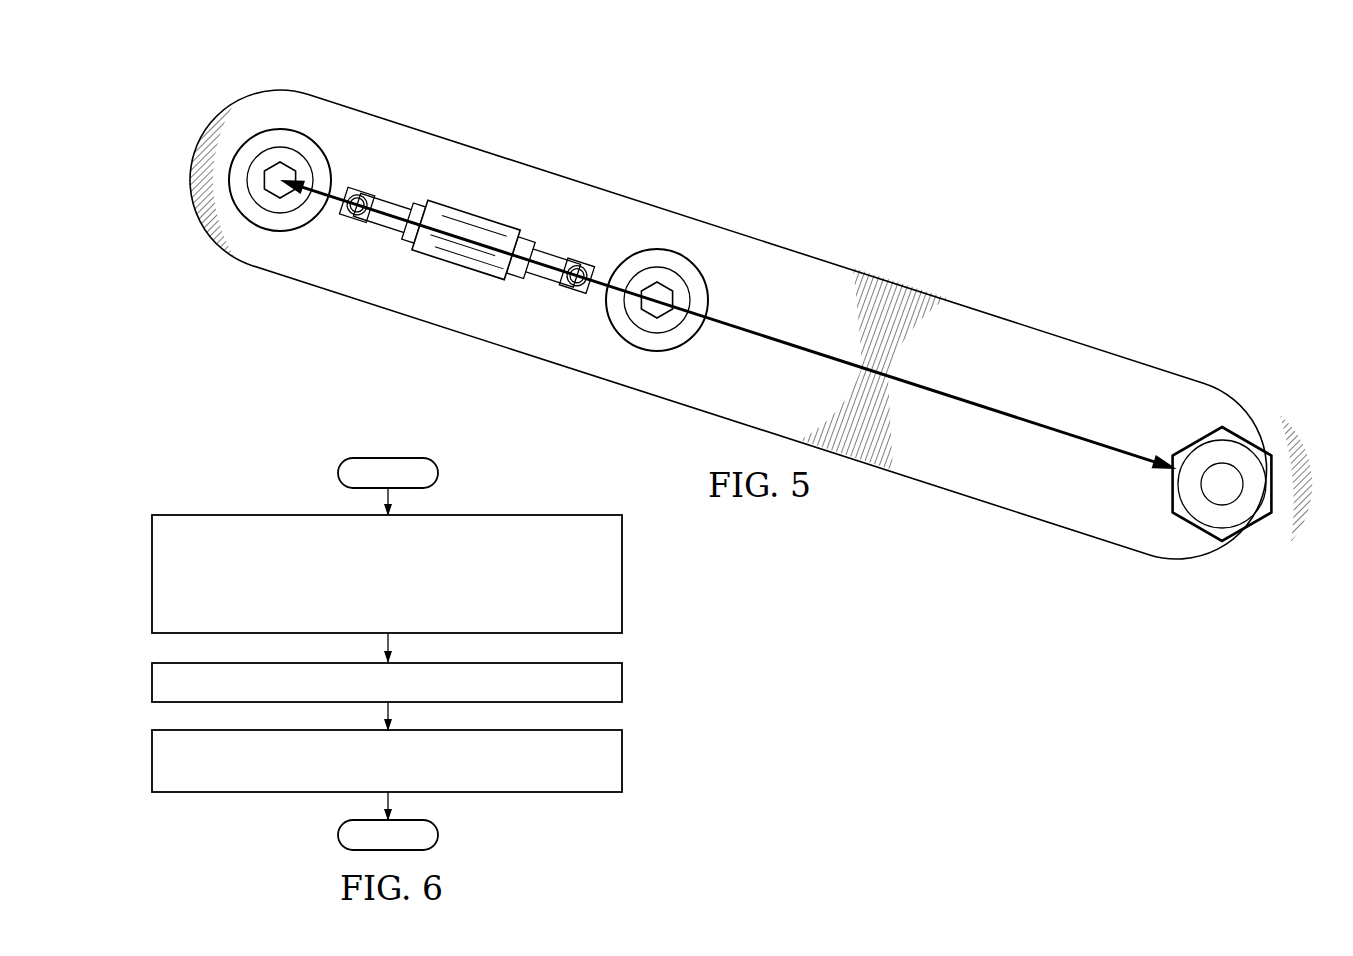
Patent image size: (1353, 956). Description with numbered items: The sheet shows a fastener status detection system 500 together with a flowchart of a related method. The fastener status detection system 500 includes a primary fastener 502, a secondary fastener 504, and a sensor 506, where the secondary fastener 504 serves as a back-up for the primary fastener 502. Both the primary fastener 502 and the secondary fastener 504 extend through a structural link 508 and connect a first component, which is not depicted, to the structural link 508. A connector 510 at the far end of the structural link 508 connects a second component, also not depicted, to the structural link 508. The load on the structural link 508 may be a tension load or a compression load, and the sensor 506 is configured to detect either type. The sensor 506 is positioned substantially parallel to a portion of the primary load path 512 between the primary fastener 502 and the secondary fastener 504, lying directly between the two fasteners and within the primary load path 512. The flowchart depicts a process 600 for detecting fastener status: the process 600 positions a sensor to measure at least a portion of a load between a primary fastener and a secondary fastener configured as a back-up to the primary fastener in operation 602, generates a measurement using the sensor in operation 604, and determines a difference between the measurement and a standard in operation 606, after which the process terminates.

In FIG. 5, the fastener status detection system 500 is at (739, 325).
In FIG. 5, the primary fastener 502 is at (335, 175).
In FIG. 5, the secondary fastener 504 is at (710, 292).
In FIG. 5, the sensor 506 is at (468, 210).
In FIG. 5, the structural link 508 is at (712, 222).
In FIG. 5, the connector 510 is at (1192, 444).
In FIG. 5, the primary load path 512 is at (928, 390).
In FIG. 6, the process 600 is at (414, 654).
In FIG. 6, the operation 602 is at (152, 557).
In FIG. 6, the operation 604 is at (152, 682).
In FIG. 6, the operation 606 is at (152, 766).